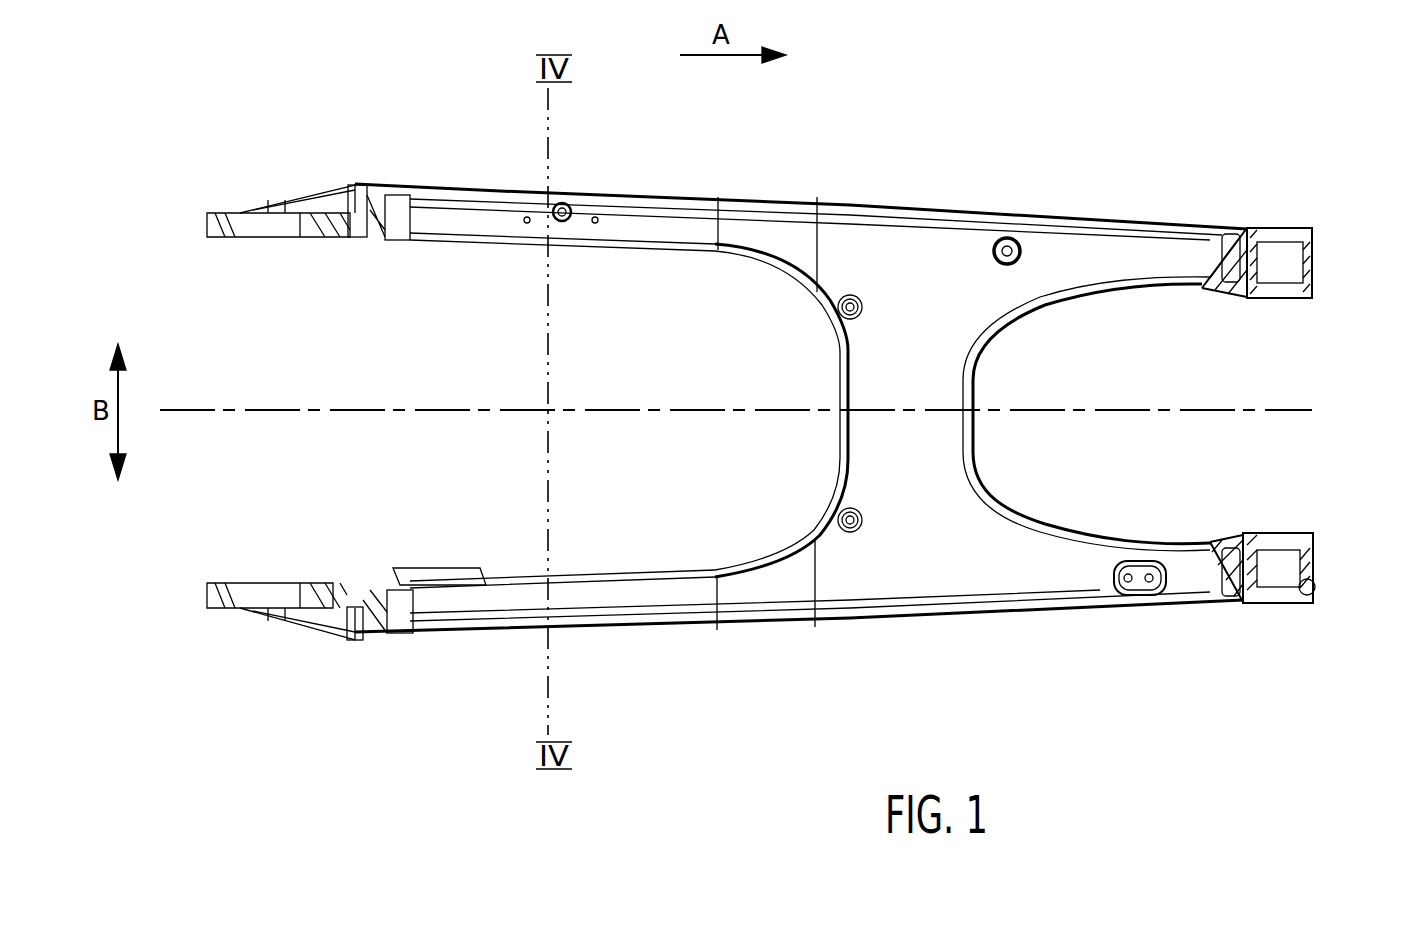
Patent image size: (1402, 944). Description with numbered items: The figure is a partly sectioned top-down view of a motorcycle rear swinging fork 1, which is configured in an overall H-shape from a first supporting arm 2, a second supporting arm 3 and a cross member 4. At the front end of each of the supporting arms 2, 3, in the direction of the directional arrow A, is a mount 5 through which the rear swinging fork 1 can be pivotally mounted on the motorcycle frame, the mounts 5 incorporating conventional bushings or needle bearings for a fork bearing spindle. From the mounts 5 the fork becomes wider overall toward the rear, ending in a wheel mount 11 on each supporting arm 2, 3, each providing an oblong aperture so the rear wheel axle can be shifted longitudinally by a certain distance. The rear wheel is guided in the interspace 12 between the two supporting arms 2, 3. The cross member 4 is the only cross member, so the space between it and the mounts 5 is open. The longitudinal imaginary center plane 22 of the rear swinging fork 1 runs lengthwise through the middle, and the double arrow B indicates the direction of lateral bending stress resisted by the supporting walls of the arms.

The rear swinging fork 1 is at (448, 708).
The first supporting arm 2 is at (678, 598).
The second supporting arm 3 is at (668, 222).
The cross member 4 is at (878, 453).
The mount 5 is at (1283, 258).
The wheel mount 11 is at (256, 222).
The interspace 12 is at (480, 365).
The longitudinal imaginary center plane 22 is at (1300, 410).